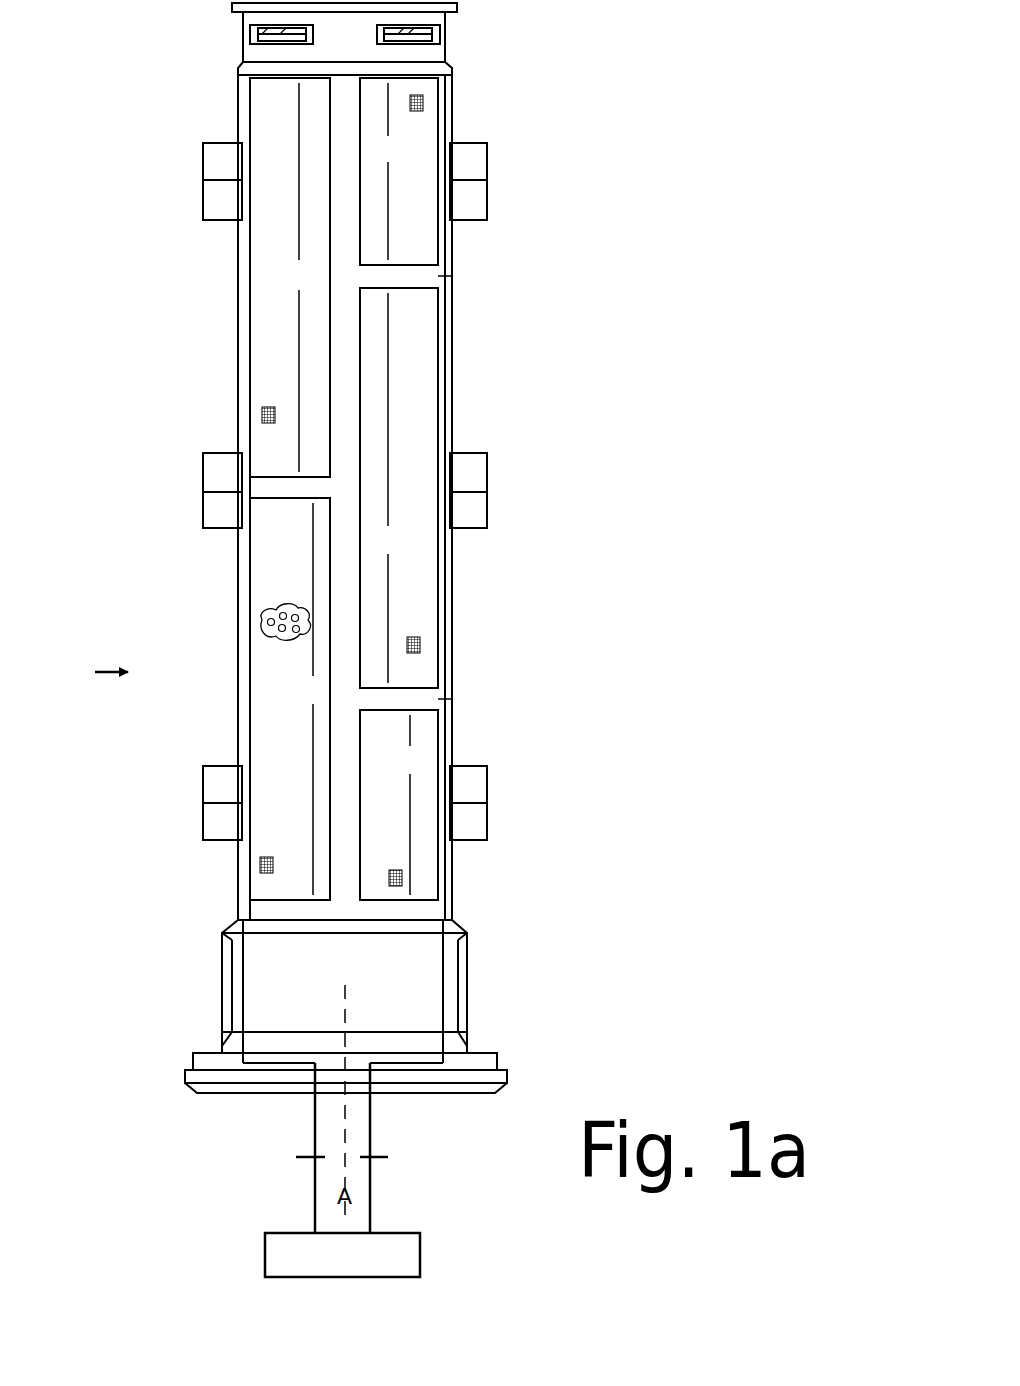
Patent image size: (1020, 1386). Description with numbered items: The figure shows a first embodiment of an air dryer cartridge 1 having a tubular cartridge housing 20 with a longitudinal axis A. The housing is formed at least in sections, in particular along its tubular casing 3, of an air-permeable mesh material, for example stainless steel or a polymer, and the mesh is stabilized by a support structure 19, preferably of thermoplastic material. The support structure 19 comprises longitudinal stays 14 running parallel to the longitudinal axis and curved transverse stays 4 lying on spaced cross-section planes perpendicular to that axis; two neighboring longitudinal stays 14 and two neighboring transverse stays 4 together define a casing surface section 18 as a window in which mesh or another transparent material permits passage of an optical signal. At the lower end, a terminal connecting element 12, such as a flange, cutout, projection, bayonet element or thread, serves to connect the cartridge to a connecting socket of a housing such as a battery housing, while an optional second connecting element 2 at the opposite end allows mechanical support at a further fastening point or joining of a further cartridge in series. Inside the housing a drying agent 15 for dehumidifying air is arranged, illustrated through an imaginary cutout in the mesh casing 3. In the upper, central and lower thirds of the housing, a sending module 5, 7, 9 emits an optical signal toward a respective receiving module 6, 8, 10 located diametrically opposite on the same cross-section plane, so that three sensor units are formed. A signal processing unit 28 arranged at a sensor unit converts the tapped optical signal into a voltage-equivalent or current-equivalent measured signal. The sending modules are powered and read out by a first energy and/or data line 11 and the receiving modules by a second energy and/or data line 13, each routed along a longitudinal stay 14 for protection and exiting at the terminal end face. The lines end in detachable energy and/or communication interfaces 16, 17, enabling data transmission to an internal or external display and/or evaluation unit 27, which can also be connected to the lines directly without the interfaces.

The air dryer cartridge 1 is at (222, 118).
The second connecting element 2 is at (445, 33).
The tubular casing 3 is at (417, 103).
The transverse stay 4 is at (400, 286).
The sending module 5 is at (463, 168).
The receiving module 6 is at (213, 150).
The sending module 7 is at (467, 477).
The receiving module 8 is at (220, 472).
The sending module 9 is at (462, 825).
The receiving module 10 is at (215, 825).
The first energy and/or data line 11 is at (370, 1133).
The terminal connecting element 12 is at (410, 993).
The second energy and/or data line 13 is at (315, 1133).
The longitudinal stay 14 is at (340, 346).
The drying agent 15 is at (258, 622).
The energy and/or communication interface 16 is at (380, 1160).
The energy and/or communication interface 17 is at (301, 1160).
The casing surface section 18 is at (330, 276).
The support structure 19 is at (405, 700).
The cartridge housing 20 is at (95, 674).
The display and/or evaluation unit 27 is at (420, 1250).
The signal processing unit 28 is at (480, 513).